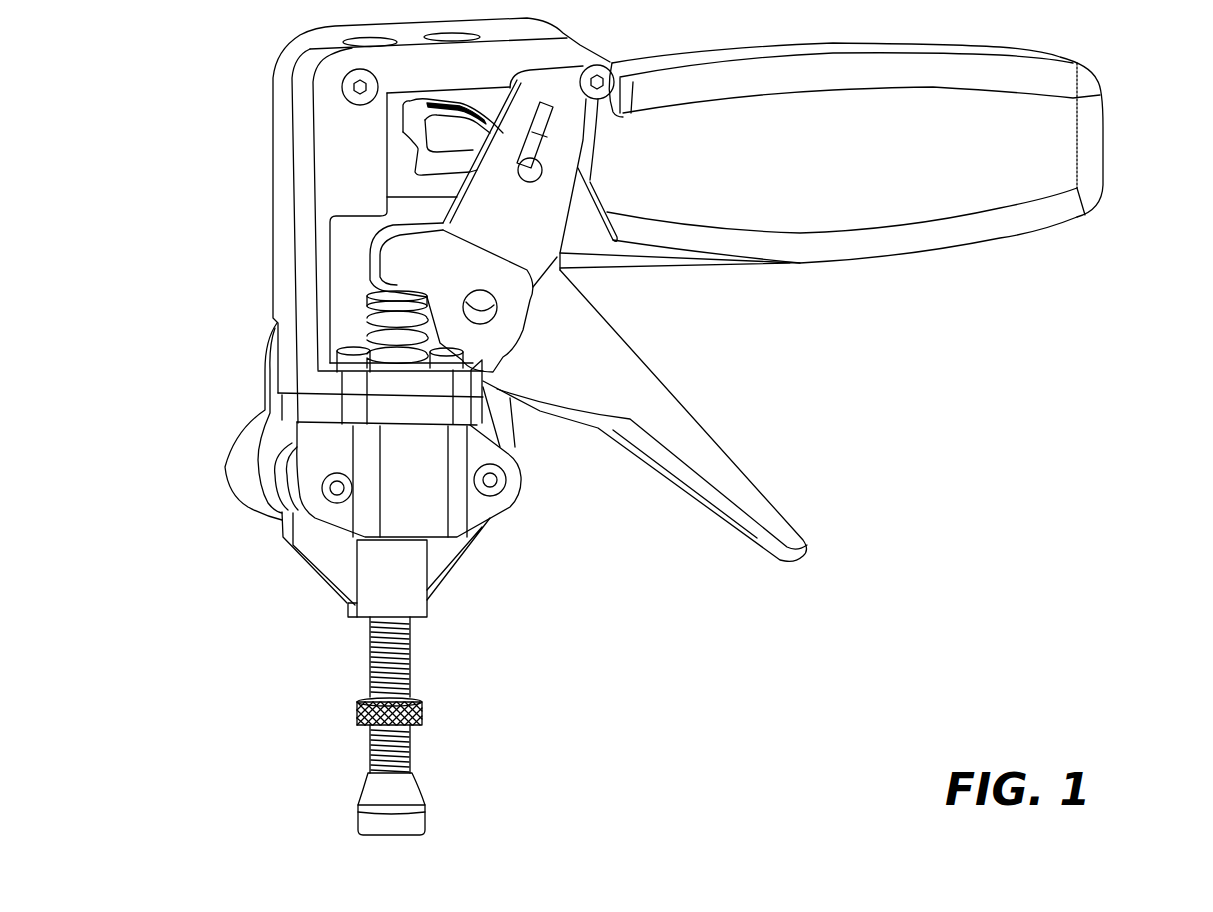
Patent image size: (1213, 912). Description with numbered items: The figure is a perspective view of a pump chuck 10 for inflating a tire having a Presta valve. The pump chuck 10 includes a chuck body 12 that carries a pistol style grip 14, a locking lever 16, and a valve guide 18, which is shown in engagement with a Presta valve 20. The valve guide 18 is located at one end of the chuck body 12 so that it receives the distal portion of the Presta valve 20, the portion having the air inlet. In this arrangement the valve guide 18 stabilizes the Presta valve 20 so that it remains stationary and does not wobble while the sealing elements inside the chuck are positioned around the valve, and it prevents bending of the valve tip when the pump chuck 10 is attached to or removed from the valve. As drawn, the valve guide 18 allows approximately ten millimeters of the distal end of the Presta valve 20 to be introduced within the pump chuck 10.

The pump chuck 10 is at (238, 45).
The chuck body 12 is at (333, 145).
The pistol style grip 14 is at (1045, 132).
The locking lever 16 is at (720, 443).
The valve guide 18 is at (407, 582).
The Presta valve 20 is at (412, 747).